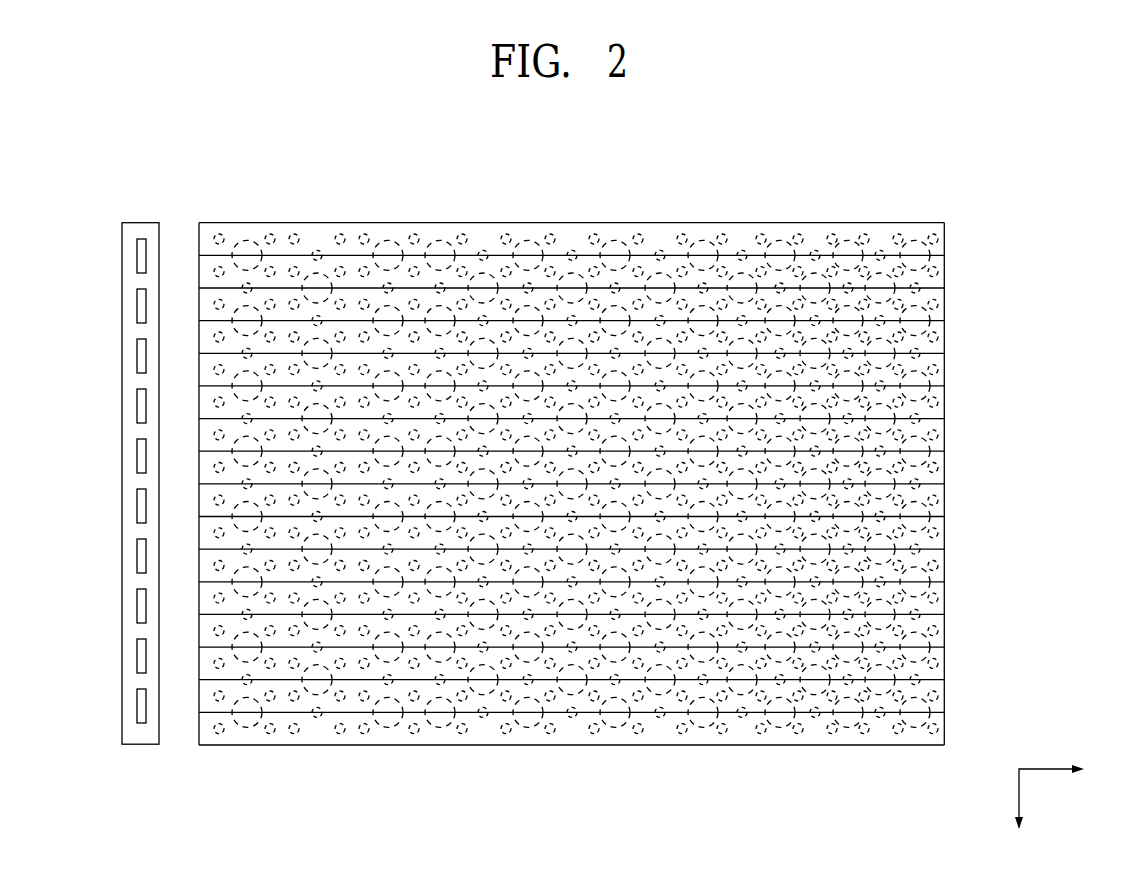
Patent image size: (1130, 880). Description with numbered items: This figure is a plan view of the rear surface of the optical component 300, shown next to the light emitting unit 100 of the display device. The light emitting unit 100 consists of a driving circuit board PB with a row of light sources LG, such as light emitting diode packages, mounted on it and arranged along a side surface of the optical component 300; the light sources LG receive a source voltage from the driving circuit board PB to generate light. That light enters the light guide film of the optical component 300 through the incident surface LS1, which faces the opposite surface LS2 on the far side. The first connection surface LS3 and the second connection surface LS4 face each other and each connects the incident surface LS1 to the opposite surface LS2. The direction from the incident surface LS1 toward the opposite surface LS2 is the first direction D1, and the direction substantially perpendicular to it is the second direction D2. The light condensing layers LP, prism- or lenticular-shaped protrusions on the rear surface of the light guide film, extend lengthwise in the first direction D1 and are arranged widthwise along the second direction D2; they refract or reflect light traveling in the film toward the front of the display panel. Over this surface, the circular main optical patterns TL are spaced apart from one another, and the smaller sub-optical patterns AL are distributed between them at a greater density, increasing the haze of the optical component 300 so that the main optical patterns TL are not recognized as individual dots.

The optical component 300 is at (868, 178).
The main optical patterns TL is at (247, 240).
The sub-optical patterns AL is at (281, 233).
The incident surface LS1 is at (198, 727).
The opposite surface LS2 is at (945, 467).
The first connection surface LS3 is at (533, 222).
The second connection surface LS4 is at (570, 745).
The light condensing layers LP is at (938, 311).
The light emitting unit 100 is at (153, 812).
The light sources LG is at (142, 704).
The driving circuit board PB is at (140, 737).
The first direction D1 is at (1063, 792).
The second direction D2 is at (1019, 836).